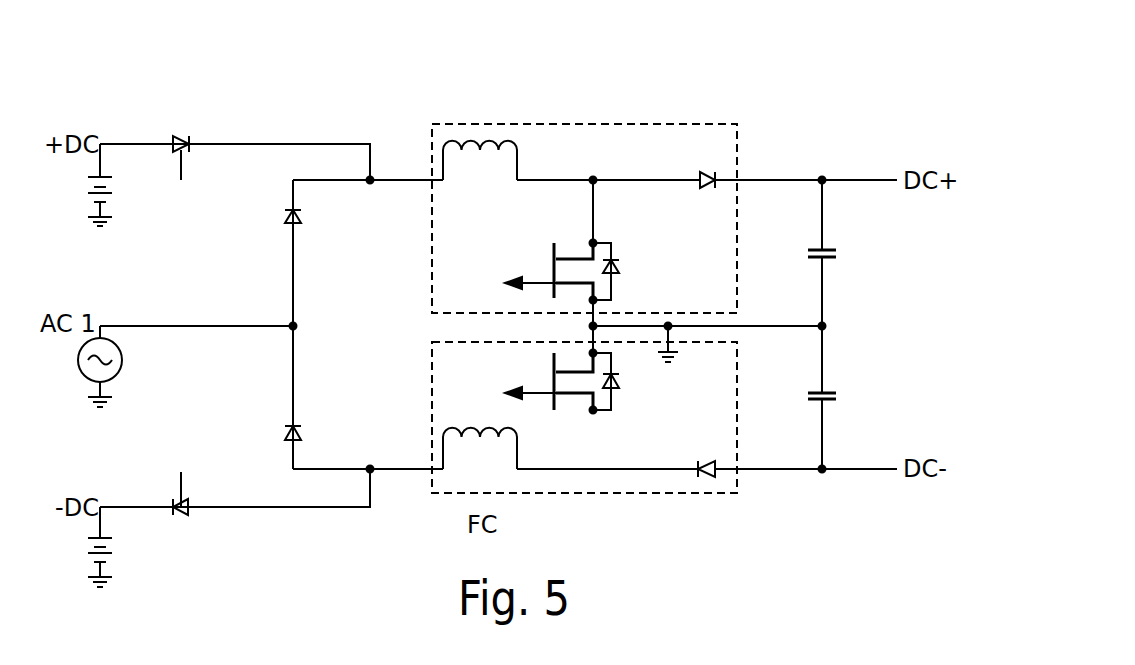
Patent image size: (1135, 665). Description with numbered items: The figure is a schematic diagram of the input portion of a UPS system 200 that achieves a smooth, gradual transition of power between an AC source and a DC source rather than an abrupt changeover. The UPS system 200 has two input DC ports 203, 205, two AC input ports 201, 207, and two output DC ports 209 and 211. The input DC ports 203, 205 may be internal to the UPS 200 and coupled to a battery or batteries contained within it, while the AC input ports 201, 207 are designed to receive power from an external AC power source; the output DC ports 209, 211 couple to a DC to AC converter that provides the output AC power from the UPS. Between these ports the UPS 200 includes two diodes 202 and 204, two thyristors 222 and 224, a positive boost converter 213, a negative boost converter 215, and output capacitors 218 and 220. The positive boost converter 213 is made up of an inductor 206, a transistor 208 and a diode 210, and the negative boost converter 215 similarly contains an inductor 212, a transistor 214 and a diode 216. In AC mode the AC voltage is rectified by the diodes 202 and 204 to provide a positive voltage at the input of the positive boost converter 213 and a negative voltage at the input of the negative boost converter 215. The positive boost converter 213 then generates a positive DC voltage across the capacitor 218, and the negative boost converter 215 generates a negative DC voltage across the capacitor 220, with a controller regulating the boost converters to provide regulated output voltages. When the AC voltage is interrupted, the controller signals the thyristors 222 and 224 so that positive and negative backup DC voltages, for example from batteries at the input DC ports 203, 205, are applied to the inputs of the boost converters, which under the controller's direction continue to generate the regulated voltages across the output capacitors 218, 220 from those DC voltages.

The UPS system 200 is at (774, 92).
The AC input port 201 is at (294, 262).
The diode 202 is at (284, 212).
The input DC port 203 is at (101, 143).
The diode 204 is at (284, 431).
The input DC port 205 is at (101, 507).
The inductor 206 is at (515, 143).
The AC input port 207 is at (294, 355).
The transistor 208 is at (553, 250).
The output DC port 209 is at (857, 181).
The diode 210 is at (702, 187).
The output DC port 211 is at (875, 472).
The inductor 212 is at (517, 432).
The positive boost converter 213 is at (651, 124).
The transistor 214 is at (553, 380).
The negative boost converter 215 is at (648, 494).
The diode 216 is at (706, 462).
The output capacitor 218 is at (837, 258).
The output capacitor 220 is at (838, 400).
The thyristor 222 is at (181, 138).
The thyristor 224 is at (186, 513).